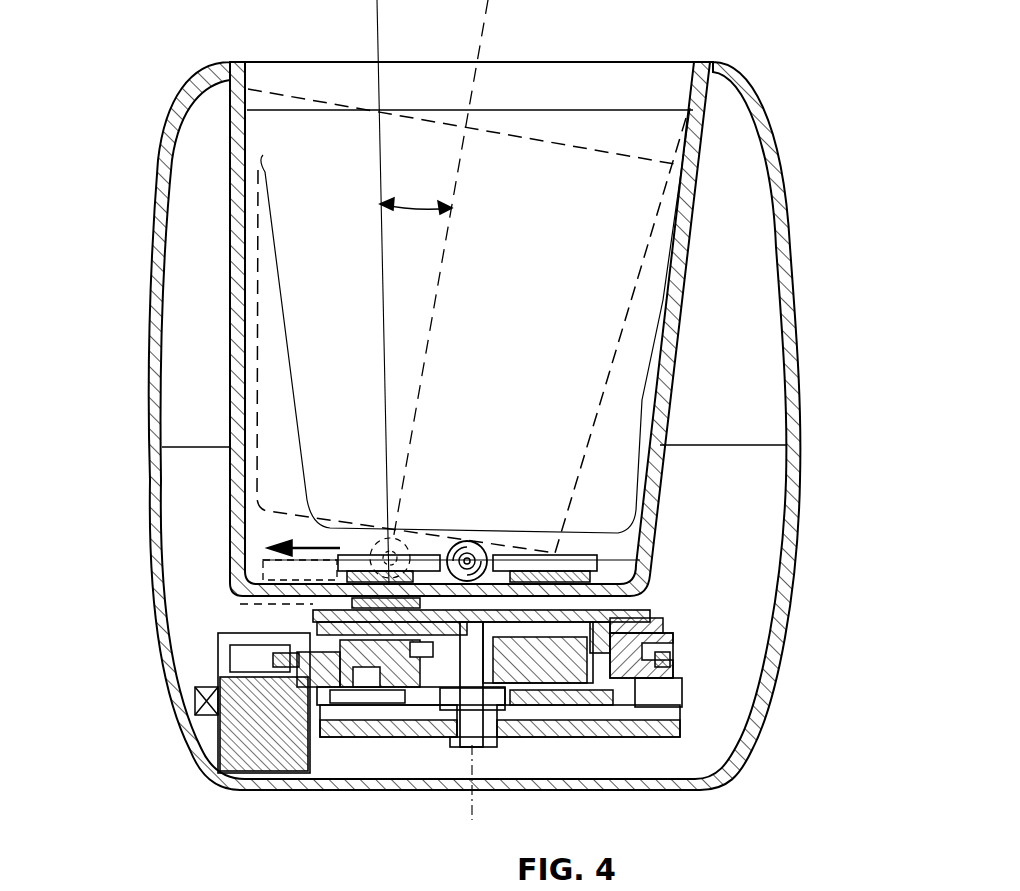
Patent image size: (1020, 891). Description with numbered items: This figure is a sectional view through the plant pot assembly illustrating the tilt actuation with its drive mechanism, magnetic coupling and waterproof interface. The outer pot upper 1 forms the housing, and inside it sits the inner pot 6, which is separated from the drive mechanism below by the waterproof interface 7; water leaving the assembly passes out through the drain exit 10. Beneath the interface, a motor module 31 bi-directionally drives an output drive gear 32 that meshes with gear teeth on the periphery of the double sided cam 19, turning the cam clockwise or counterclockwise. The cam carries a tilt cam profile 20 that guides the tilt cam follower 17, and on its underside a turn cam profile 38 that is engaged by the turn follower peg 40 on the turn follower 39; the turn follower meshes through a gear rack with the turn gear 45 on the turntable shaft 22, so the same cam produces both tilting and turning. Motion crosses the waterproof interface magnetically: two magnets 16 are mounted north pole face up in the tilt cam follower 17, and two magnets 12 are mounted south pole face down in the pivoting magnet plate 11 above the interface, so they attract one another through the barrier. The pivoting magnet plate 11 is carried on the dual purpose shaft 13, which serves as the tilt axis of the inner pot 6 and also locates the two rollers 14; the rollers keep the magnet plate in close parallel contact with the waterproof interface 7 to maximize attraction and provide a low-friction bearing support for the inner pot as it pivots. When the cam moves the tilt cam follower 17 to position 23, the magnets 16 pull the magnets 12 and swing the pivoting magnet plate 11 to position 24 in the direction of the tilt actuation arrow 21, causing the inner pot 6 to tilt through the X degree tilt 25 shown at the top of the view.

The outer pot upper 1 is at (778, 157).
The inner pot 6 is at (548, 140).
The waterproof interface 7 is at (245, 584).
The drain exit 10 is at (380, 605).
The pivoting magnet plate 11 is at (602, 574).
The magnet 12 is at (355, 568).
The dual purpose shaft 13 is at (460, 547).
The roller 14 is at (490, 538).
The magnet 16 is at (617, 627).
The tilt cam follower 17 is at (643, 650).
The double sided cam 19 is at (673, 667).
The tilt cam profile 20 is at (385, 690).
The tilt actuation arrow 21 is at (345, 530).
The turntable shaft 22 is at (495, 710).
The tilt cam follower position 23 is at (245, 614).
The swinging magnet mount position 24 is at (300, 572).
The X ° tilt 25 is at (403, 182).
The motor module 31 is at (220, 747).
The output drive gear 32 is at (218, 648).
The turn cam profile 38 is at (427, 655).
The turn follower 39 is at (660, 707).
The turn follower peg 40 is at (635, 678).
The turn gear 45 is at (455, 708).